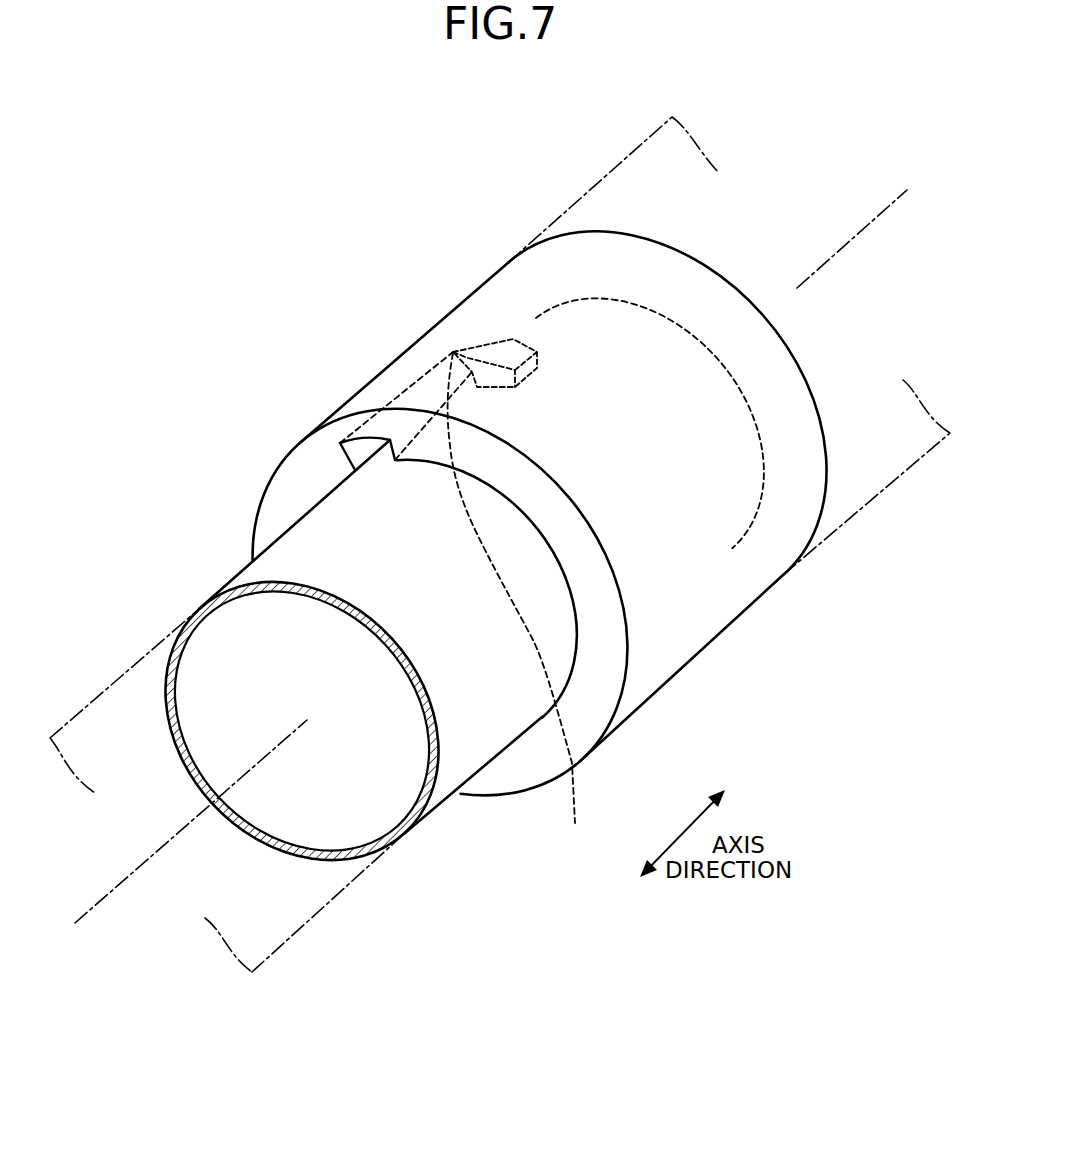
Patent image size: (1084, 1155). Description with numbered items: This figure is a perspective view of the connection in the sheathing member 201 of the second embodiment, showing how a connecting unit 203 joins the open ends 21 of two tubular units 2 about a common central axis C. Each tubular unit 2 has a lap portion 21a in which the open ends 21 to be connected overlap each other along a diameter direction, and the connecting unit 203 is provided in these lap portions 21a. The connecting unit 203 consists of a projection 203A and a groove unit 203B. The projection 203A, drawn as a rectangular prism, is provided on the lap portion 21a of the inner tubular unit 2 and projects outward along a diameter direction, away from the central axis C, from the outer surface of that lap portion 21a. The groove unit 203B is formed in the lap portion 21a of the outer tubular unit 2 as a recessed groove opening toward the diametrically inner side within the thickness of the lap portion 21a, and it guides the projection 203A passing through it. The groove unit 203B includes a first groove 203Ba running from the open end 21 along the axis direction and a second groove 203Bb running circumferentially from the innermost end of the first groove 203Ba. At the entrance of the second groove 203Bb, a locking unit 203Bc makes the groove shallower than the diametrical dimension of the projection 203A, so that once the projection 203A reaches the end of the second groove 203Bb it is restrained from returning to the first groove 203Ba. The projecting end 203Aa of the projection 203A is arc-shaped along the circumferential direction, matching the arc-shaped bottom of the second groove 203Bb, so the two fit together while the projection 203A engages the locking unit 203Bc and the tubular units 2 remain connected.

The tubular unit 2 is at (246, 580).
The open end 21 is at (322, 528).
The lap portion 21a is at (593, 298).
The sheathing member 201 is at (402, 178).
The connecting unit 203 is at (427, 514).
The projection 203A is at (525, 604).
The projecting end 203Aa is at (520, 340).
The groove unit 203B is at (383, 393).
The first groove 203Ba is at (418, 363).
The second groove 203Bb is at (510, 338).
The locking unit 203Bc is at (453, 352).
The central axis C is at (113, 892).